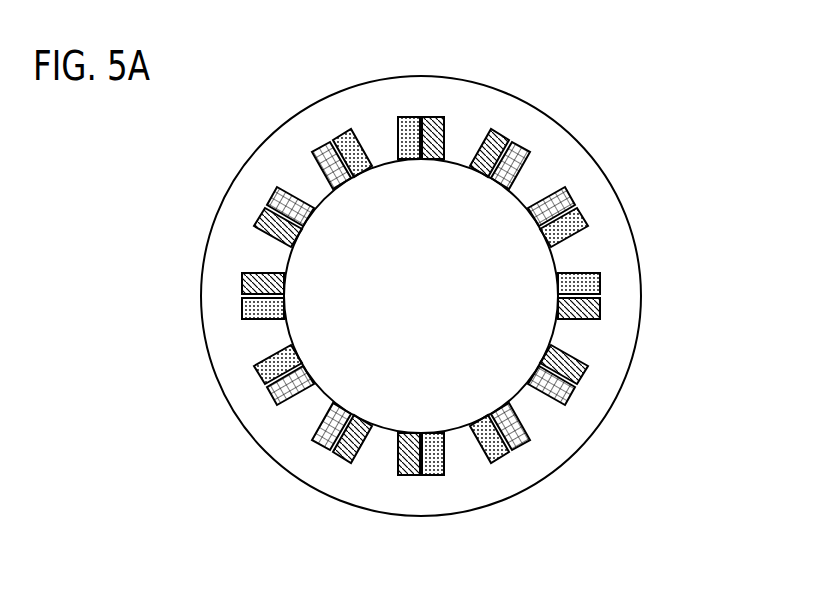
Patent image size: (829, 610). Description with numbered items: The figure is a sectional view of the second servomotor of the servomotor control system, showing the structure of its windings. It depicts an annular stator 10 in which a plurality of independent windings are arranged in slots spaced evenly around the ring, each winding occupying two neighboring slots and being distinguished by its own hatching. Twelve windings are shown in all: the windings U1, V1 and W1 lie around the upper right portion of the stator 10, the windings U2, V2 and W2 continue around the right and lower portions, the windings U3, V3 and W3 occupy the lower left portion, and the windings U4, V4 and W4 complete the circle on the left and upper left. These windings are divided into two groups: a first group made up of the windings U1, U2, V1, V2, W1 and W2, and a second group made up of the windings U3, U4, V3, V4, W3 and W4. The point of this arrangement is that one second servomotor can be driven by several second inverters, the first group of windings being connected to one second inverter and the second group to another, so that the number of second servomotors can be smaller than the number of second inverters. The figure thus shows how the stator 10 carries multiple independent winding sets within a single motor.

The stator 10 is at (612, 184).
The winding U1 is at (494, 130).
The winding V1 is at (568, 190).
The winding W1 is at (604, 282).
The winding U2 is at (587, 368).
The winding V2 is at (525, 446).
The winding W2 is at (441, 478).
The winding U3 is at (350, 462).
The winding V3 is at (274, 400).
The winding W3 is at (241, 306).
The winding U4 is at (256, 224).
The winding V4 is at (318, 150).
The winding W4 is at (404, 117).